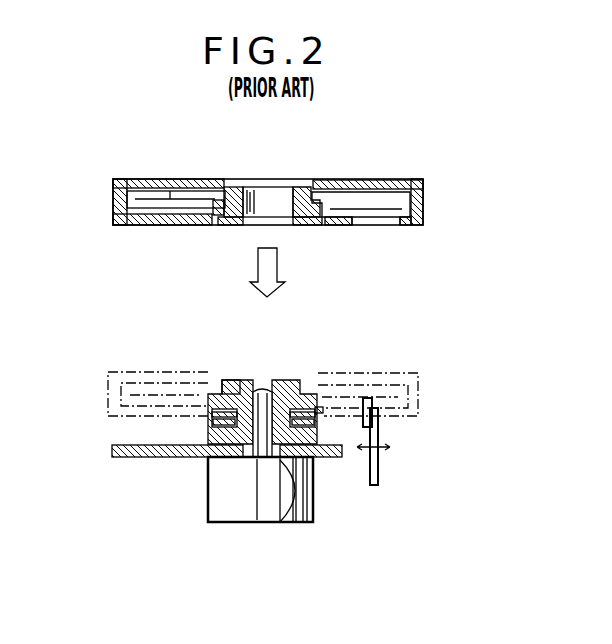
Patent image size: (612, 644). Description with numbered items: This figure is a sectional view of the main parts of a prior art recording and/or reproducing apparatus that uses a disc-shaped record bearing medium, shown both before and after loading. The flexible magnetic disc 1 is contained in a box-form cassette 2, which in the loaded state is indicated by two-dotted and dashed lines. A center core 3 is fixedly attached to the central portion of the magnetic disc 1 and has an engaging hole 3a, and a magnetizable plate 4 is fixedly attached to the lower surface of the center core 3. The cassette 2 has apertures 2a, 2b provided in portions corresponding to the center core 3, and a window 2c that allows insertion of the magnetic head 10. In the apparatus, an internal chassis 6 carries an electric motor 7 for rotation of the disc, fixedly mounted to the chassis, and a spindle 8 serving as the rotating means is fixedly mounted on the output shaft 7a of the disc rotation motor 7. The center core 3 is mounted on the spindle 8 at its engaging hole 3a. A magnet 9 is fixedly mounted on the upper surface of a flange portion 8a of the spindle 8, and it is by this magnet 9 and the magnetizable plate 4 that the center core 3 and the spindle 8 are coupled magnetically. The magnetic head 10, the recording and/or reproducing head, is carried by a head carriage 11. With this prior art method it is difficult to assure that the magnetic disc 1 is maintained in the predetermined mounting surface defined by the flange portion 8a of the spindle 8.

The flexible magnetic disc 1 is at (160, 191).
The cassette 2 is at (137, 178).
The aperture 2a is at (222, 182).
The aperture 2b is at (326, 226).
The window 2c is at (387, 226).
The center core 3 is at (231, 192).
The engaging hole 3a is at (273, 192).
The magnetizable plate 4 is at (227, 226).
The internal chassis 6 is at (148, 458).
The electric motor 7 is at (208, 507).
The output shaft 7a is at (257, 458).
The spindle 8 is at (247, 381).
The flange portion 8a is at (293, 458).
The magnet 9 is at (210, 432).
The magnetic head 10 is at (377, 410).
The head carriage 11 is at (379, 472).